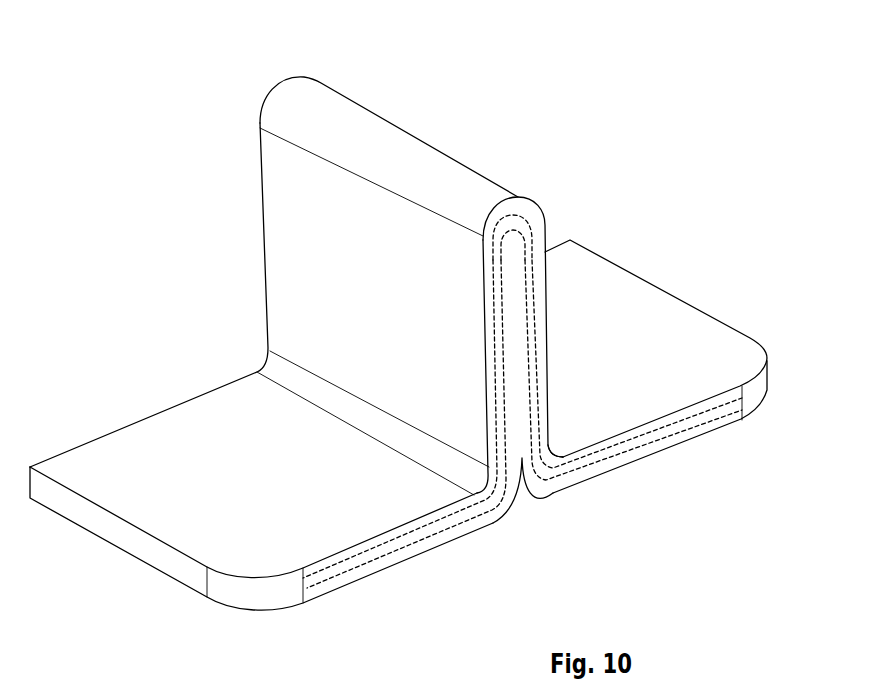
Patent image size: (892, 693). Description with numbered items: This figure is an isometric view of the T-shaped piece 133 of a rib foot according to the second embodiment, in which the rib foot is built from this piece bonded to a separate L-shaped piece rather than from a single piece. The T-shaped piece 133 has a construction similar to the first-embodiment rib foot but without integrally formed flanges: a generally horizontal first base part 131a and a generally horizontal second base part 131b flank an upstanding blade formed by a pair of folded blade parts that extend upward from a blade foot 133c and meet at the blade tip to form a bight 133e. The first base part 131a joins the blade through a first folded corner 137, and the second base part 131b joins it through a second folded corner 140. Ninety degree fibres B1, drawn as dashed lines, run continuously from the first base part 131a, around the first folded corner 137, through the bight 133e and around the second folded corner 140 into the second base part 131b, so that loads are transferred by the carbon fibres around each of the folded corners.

The T-shaped piece 133 is at (487, 177).
The bight 133e is at (520, 231).
The blade foot 133c is at (523, 522).
The first base part 131a is at (261, 525).
The second base part 131b is at (656, 366).
The first folded corner 137 is at (420, 446).
The second folded corner 140 is at (555, 453).
The 90 degree fibres B1 is at (497, 362).